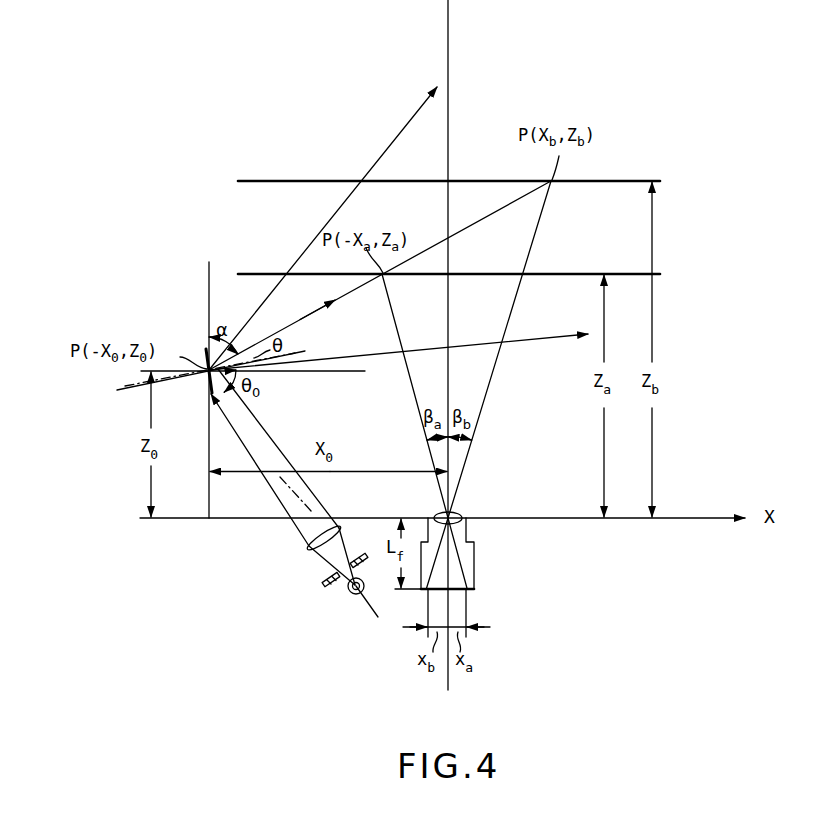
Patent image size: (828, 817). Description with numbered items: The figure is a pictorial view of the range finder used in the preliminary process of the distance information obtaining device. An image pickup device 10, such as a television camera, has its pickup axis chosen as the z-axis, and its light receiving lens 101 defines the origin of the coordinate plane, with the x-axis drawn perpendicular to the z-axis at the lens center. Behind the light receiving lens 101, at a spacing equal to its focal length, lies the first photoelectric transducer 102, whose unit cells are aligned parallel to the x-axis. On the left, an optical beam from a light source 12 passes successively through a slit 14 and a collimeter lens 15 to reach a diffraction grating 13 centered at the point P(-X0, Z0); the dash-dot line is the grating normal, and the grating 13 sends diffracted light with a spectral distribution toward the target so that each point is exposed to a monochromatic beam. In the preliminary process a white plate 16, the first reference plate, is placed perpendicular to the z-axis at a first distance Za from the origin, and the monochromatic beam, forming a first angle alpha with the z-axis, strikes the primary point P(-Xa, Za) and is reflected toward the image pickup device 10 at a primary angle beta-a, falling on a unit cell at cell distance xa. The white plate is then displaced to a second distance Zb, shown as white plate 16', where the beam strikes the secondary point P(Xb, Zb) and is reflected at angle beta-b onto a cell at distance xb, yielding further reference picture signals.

The image pickup device 10 is at (475, 560).
The light receiving lens 101 is at (456, 513).
The first photoelectric transducer 102 is at (467, 596).
The light source 12 is at (351, 596).
The diffraction grating 13 is at (207, 357).
The slit 14 is at (326, 587).
The collimeter lens 15 is at (310, 548).
The white plate 16 is at (469, 249).
The white plate (displaced) 16' is at (471, 156).